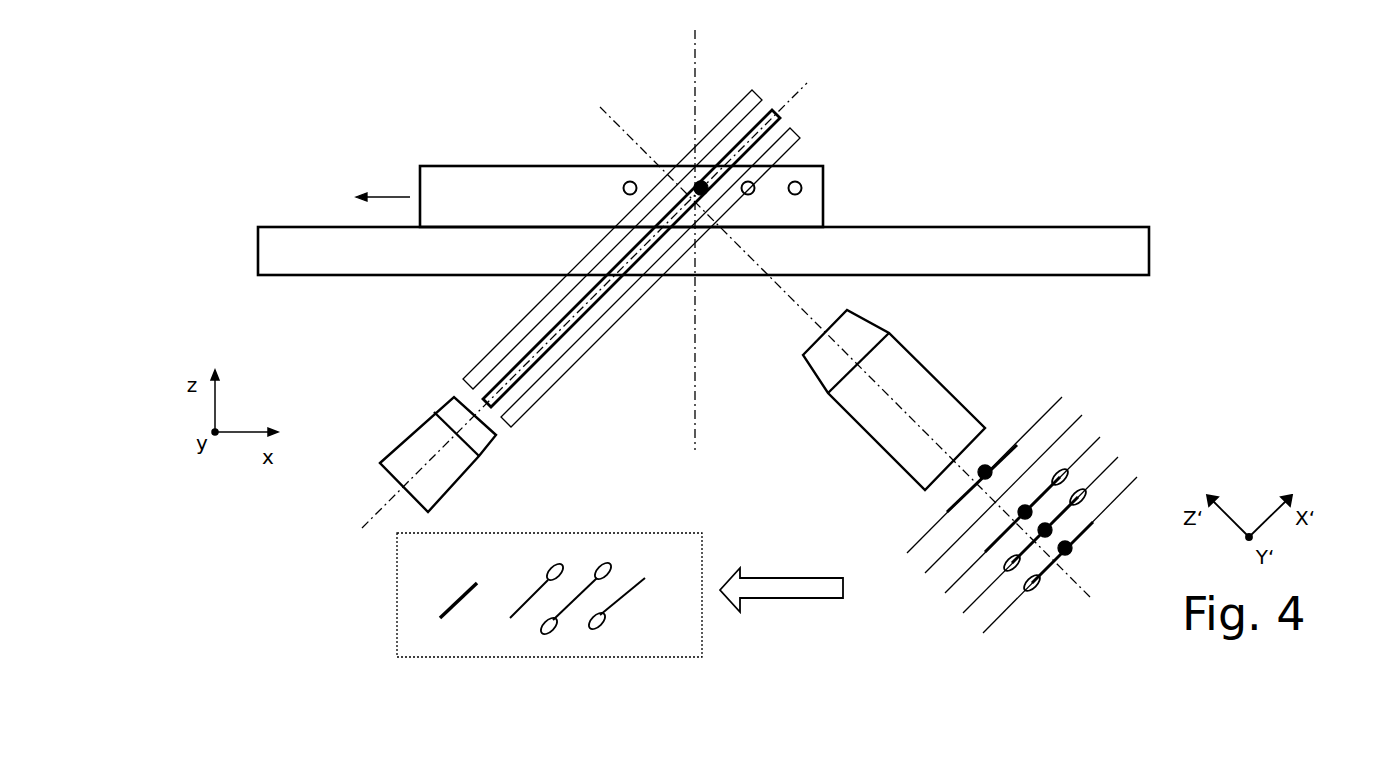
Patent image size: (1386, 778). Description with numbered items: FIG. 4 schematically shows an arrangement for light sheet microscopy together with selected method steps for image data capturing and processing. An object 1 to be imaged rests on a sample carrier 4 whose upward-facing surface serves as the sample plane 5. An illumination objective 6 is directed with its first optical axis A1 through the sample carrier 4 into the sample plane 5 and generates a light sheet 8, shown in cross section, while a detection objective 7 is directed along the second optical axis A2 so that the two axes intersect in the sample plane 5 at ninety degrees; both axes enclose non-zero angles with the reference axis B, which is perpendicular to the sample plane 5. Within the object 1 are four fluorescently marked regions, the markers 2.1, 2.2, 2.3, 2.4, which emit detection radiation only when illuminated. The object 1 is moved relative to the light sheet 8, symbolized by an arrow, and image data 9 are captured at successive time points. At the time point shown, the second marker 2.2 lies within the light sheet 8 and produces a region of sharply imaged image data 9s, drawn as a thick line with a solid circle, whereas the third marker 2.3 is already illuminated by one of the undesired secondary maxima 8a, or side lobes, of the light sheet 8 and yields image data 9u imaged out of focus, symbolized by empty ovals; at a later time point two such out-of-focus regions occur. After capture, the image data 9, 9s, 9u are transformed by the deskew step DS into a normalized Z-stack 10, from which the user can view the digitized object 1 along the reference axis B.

The object 1 is at (483, 167).
The marker 2.1 is at (628, 181).
The marker 2.2 is at (692, 180).
The marker 2.3 is at (756, 183).
The marker 2.4 is at (803, 188).
The sample carrier 4 is at (1137, 237).
The sample plane 5 is at (958, 218).
The illumination objective 6 is at (418, 420).
The detection objective 7 is at (888, 432).
The light sheet 8 is at (771, 108).
The secondary maxima 8a is at (512, 327).
The image data 9 is at (1072, 337).
The region of sharply imaged image data 9s is at (1037, 500).
The image data imaged out of focus 9u is at (1068, 474).
The normalized Z-stack 10 is at (397, 602).
The first optical axis A1 is at (380, 513).
The second optical axis A2 is at (797, 303).
The reference axis B is at (695, 76).
The deskew DS is at (797, 575).